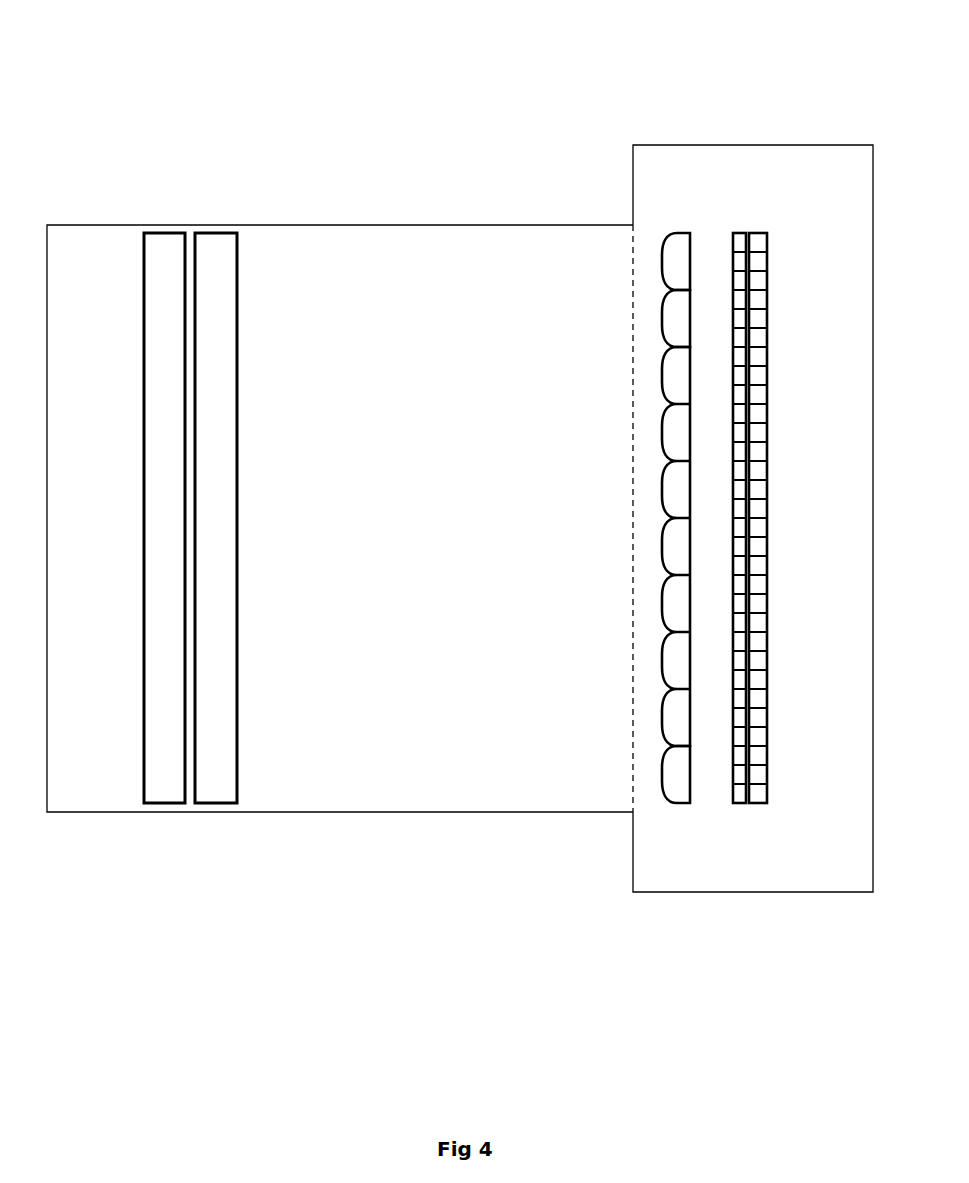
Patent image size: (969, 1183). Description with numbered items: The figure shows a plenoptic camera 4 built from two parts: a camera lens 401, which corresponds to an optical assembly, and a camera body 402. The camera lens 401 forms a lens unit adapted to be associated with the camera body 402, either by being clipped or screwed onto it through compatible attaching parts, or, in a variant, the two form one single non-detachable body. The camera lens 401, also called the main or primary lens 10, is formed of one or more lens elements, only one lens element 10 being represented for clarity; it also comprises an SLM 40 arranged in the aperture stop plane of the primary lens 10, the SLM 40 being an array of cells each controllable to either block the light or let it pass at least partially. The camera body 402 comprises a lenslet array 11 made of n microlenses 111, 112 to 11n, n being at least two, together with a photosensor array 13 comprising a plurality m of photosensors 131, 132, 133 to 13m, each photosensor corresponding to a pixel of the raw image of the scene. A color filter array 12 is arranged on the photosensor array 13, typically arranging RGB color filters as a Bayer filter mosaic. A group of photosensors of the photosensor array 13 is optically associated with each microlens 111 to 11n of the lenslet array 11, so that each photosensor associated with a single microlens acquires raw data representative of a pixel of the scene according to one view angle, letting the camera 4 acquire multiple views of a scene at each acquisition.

The plenoptic camera 4 is at (460, 504).
The primary lens 10 is at (144, 382).
The SLM 40 is at (237, 397).
The lenslet array 11 is at (617, 438).
The microlens 111 is at (660, 268).
The microlens 112 is at (660, 322).
The microlens 11n is at (661, 775).
The color filter array 12 is at (737, 223).
The photosensor array 13 is at (810, 442).
The photosensor 131 is at (768, 237).
The photosensor 132 is at (768, 263).
The photosensor 133 is at (768, 283).
The photosensor 13m is at (768, 796).
The camera lens 401 is at (317, 812).
The camera body 402 is at (725, 893).